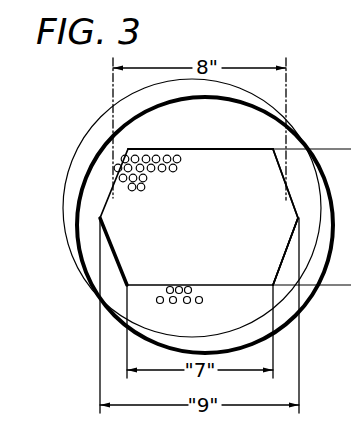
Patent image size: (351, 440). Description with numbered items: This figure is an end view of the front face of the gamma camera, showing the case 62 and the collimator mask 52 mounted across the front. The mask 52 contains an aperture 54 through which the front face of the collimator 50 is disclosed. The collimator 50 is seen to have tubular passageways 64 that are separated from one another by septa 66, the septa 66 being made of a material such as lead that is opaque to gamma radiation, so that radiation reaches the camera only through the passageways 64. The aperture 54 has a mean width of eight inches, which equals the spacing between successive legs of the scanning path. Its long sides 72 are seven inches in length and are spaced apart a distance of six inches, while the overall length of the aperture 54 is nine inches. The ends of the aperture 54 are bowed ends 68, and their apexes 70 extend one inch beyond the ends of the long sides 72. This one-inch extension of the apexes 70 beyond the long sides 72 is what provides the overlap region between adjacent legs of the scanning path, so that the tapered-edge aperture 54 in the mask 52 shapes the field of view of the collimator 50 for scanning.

The collimator 50 is at (188, 227).
The mask 52 is at (88, 163).
The aperture 54 is at (108, 253).
The case 62 is at (298, 123).
The tubular passageways 64 is at (176, 169).
The septa 66 is at (138, 191).
The bowed ends 68 is at (122, 267).
The apexes 70 is at (297, 218).
The long sides 72 is at (210, 148).